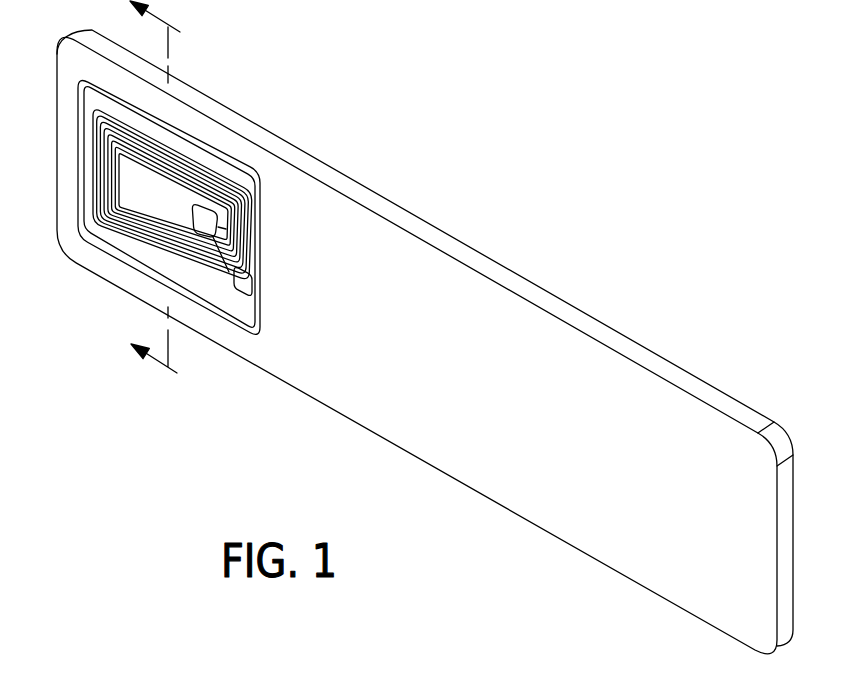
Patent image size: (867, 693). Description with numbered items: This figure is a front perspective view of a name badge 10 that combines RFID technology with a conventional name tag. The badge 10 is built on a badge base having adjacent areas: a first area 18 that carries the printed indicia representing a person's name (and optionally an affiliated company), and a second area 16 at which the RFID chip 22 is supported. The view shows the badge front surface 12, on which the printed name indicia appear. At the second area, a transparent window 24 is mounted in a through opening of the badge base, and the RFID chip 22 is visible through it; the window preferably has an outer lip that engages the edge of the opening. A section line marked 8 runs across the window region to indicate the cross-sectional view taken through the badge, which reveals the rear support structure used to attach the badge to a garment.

The section line 8- 8 is at (164, 196).
The name badge 10 is at (402, 162).
The badge front surface 12 is at (585, 545).
The second area 16 is at (217, 106).
The first area 18 is at (478, 292).
The RFID chip 22 is at (143, 226).
The transparent window 24 is at (244, 178).